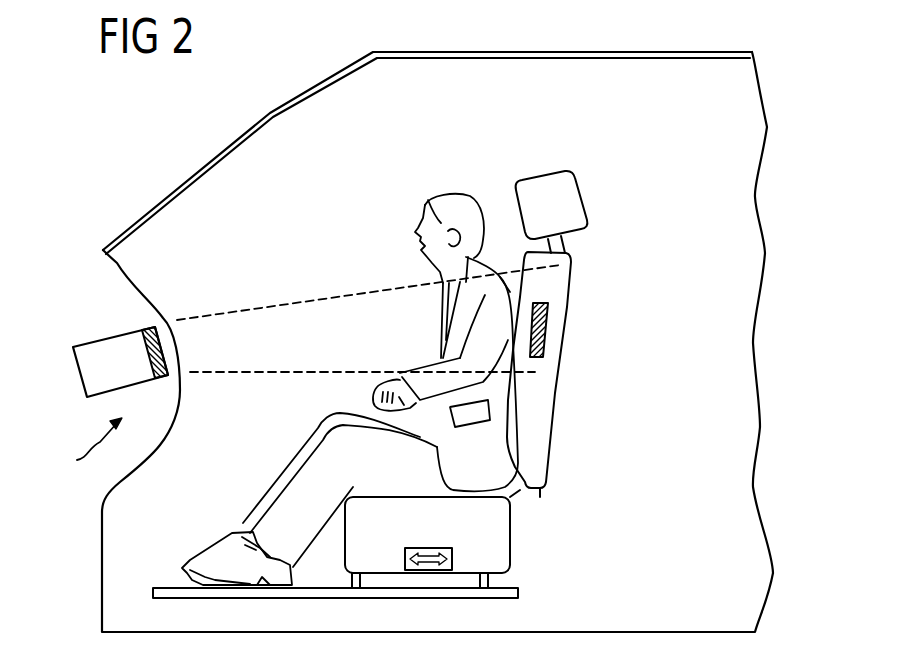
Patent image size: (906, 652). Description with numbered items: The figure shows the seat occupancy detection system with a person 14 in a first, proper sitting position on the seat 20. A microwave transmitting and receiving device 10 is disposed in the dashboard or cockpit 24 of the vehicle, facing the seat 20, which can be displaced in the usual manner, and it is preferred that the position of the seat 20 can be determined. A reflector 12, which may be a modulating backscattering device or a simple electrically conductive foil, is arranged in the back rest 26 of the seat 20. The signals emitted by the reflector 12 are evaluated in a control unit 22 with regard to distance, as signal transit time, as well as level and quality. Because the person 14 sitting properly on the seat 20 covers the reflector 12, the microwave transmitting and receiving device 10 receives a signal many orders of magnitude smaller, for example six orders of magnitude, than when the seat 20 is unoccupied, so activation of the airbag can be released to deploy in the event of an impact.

The microwave transmitting and receiving device 10 is at (167, 357).
The reflector 12 is at (547, 340).
The person 14 is at (440, 313).
The seat 20 is at (500, 552).
The control unit 22 is at (108, 352).
The cockpit 24 is at (82, 448).
The back rest 26 is at (560, 277).